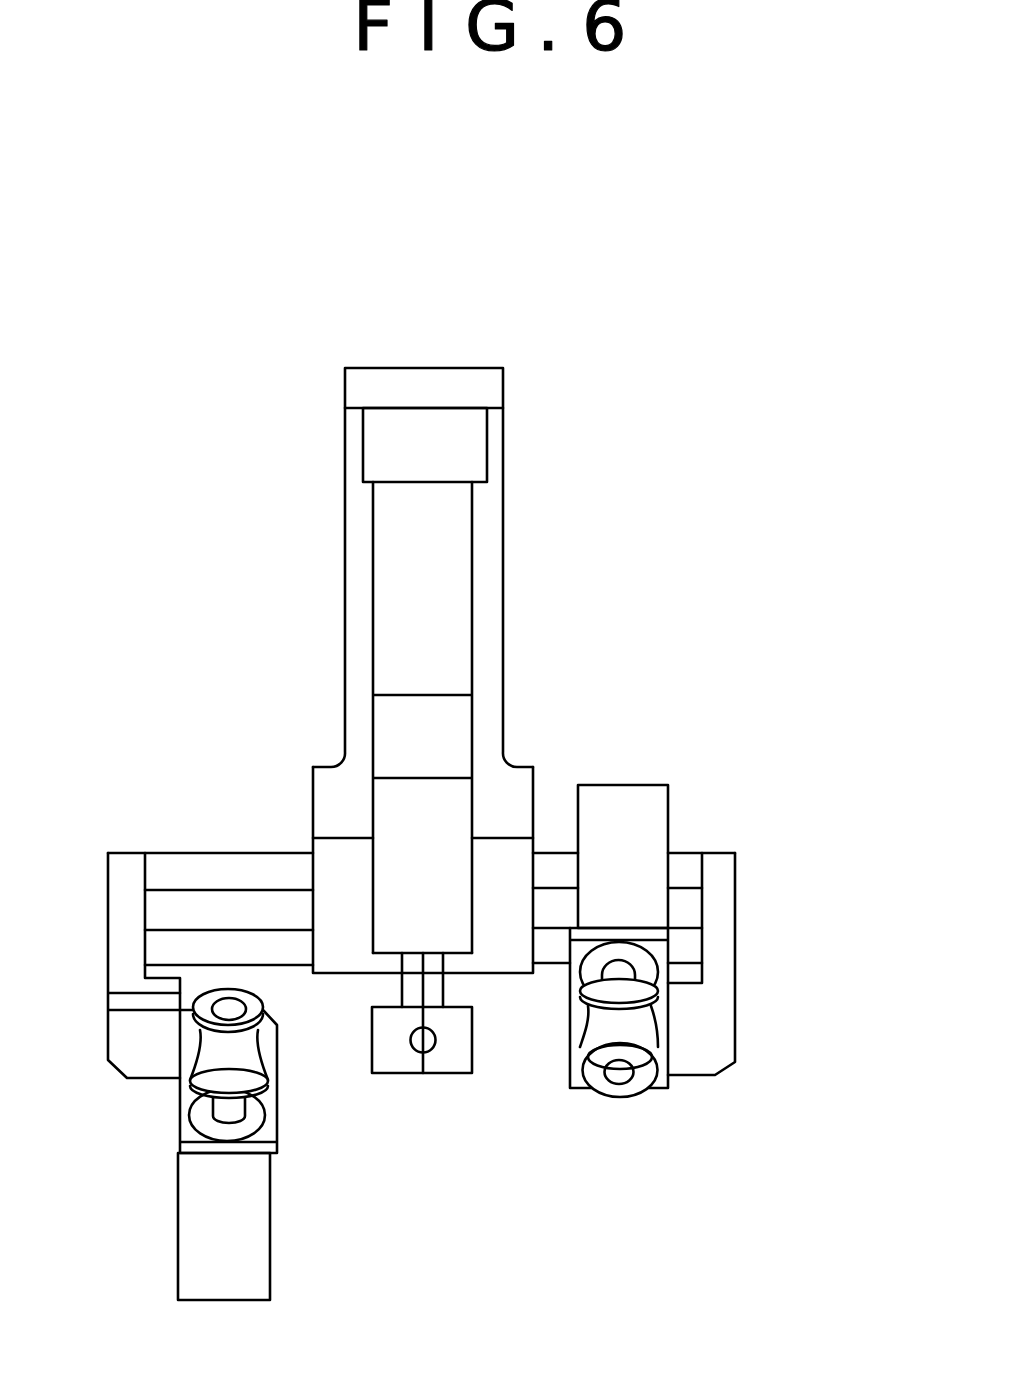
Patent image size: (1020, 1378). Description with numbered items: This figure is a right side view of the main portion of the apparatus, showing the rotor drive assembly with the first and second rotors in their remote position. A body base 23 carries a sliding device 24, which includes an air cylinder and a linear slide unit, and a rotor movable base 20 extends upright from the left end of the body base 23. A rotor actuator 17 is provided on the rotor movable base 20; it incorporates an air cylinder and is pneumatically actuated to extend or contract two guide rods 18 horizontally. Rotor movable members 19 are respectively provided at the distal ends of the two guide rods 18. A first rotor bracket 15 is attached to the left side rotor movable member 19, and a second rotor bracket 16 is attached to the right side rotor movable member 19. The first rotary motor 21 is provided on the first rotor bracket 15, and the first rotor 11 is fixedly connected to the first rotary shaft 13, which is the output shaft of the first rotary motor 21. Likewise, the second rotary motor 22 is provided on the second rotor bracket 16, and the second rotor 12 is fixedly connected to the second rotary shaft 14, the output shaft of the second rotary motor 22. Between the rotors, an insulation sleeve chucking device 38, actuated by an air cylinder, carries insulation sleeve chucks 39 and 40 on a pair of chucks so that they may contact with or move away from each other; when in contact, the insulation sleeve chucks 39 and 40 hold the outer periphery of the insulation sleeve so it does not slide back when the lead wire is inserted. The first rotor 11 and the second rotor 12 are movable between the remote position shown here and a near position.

The first rotor 11 is at (242, 1058).
The second rotor 12 is at (582, 1046).
The first rotary shaft 13 is at (233, 1115).
The second rotary shaft 14 is at (610, 973).
The first rotor bracket 15 is at (187, 1095).
The second rotor bracket 16 is at (653, 1035).
The rotor actuator 17 is at (326, 853).
The guide rods 18 is at (165, 948).
The rotor movable members 19 is at (127, 905).
The rotor movable base 20 is at (485, 565).
The first rotary motor 21 is at (245, 1260).
The second rotary motor 22 is at (653, 815).
The body base 23 is at (365, 392).
The sliding device 24 is at (467, 452).
The insulation sleeve chucking device 38 is at (446, 883).
The insulation sleeve chuck 39 is at (393, 1063).
The insulation sleeve chuck 40 is at (460, 1063).